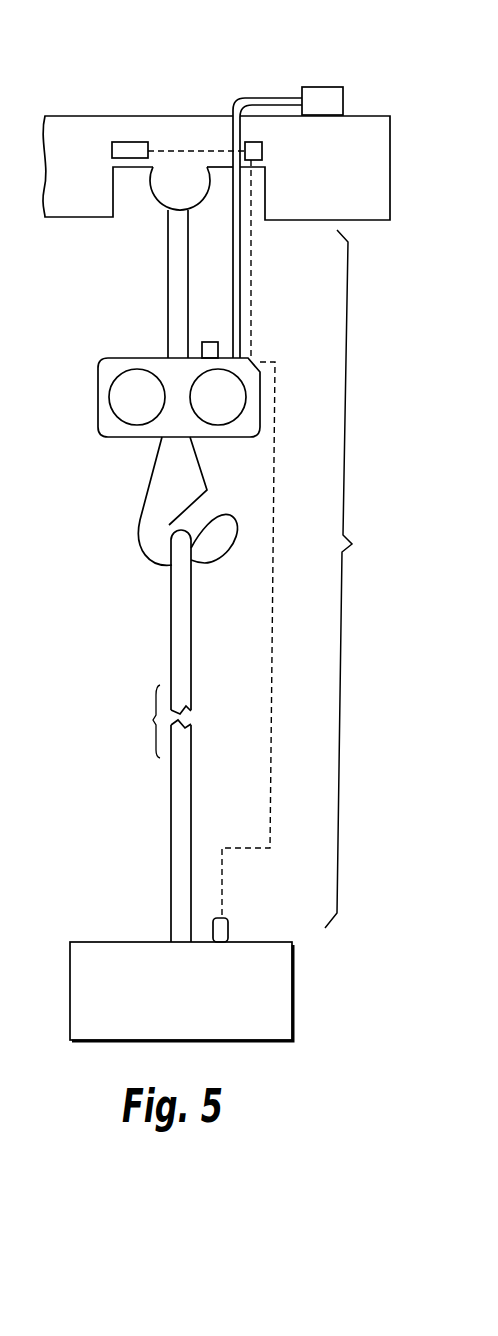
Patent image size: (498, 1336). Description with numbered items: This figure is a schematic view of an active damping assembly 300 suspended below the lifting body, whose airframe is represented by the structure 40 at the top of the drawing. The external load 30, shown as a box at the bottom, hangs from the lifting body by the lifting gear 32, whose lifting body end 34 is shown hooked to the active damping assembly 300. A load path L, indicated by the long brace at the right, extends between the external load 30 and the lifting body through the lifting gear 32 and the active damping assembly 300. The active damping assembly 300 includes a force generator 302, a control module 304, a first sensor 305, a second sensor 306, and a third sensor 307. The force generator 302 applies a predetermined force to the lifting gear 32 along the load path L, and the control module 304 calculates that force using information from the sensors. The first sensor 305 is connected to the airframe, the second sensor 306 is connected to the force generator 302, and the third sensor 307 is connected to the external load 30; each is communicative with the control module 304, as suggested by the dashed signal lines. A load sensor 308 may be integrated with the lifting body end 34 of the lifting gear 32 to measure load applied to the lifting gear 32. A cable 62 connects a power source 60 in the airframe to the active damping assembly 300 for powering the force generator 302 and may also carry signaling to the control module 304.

The external load 30 is at (93, 942).
The lifting gear 32 is at (140, 727).
The lifting body end 34 is at (138, 736).
The aircraft / host body 40 is at (342, 198).
The power source 60 is at (336, 103).
The cable 62 is at (233, 110).
The active damping assembly 300 is at (151, 431).
The force generator 302 is at (97, 391).
The control module 304 is at (262, 150).
The first sensor 305 is at (126, 142).
The second sensor 306 is at (208, 342).
The third sensor 307 is at (229, 932).
The load sensor 308 is at (136, 563).
The load path L is at (351, 579).